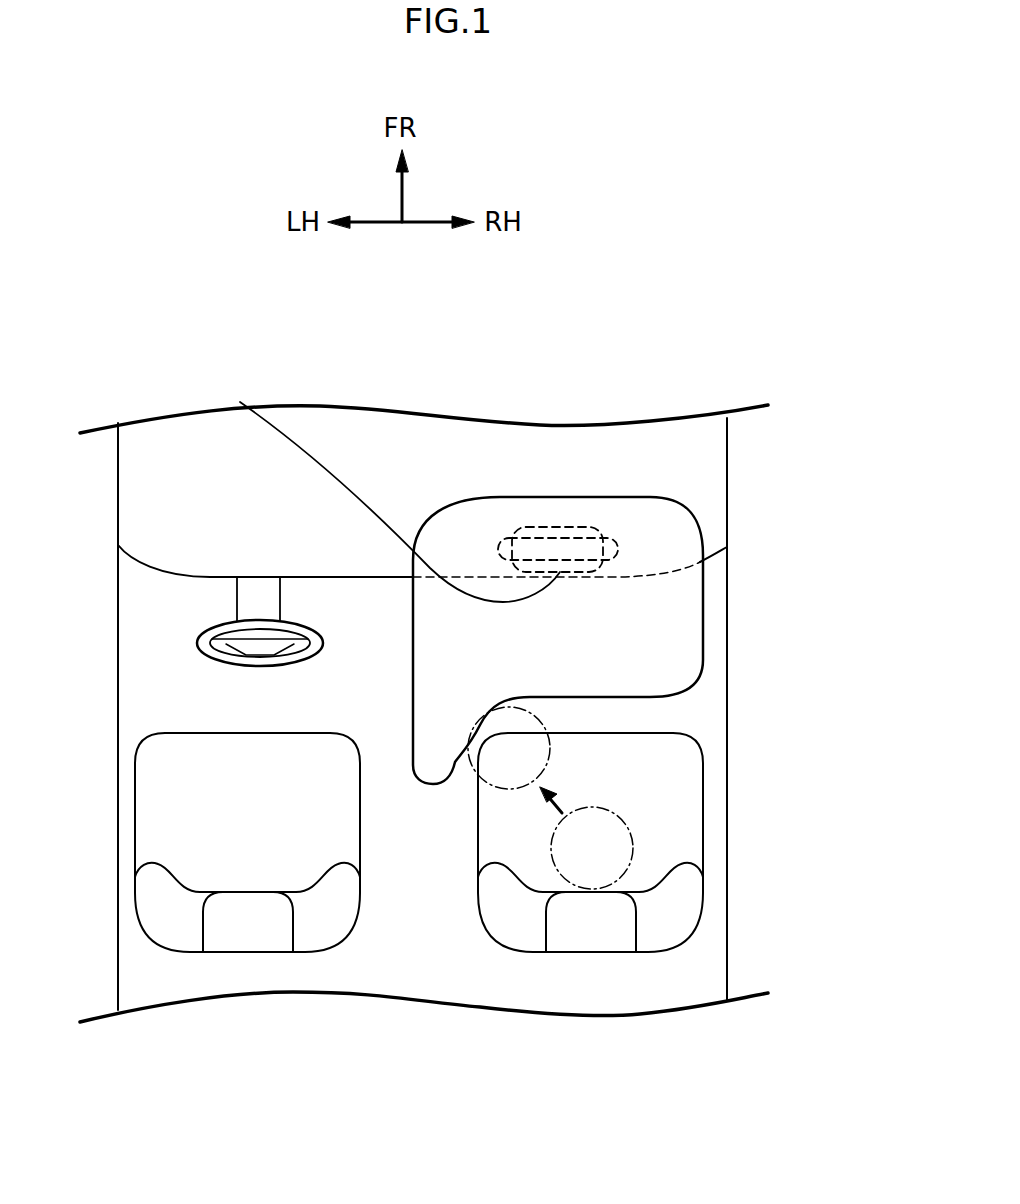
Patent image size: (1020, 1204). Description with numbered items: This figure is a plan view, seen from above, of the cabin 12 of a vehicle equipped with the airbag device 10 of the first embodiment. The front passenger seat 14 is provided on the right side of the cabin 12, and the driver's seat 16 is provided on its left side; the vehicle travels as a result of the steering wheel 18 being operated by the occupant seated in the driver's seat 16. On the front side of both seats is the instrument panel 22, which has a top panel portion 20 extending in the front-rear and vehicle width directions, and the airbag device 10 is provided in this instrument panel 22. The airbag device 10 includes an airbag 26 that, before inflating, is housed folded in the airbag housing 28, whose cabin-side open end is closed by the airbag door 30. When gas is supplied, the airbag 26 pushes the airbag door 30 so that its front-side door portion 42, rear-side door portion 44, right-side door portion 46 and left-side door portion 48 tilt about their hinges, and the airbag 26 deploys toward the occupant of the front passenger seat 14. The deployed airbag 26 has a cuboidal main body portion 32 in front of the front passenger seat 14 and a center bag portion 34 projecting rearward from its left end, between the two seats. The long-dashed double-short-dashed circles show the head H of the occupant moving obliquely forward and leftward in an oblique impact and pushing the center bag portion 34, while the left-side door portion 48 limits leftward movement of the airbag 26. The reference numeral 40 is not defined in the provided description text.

The airbag device 10 is at (540, 460).
The cabin 12 is at (403, 966).
The front passenger seat 14 is at (580, 952).
The driver's seat 16 is at (255, 952).
The steering wheel 18 is at (196, 645).
The top panel portion 20 is at (632, 450).
The instrument panel 22 is at (692, 467).
The airbag 26 is at (707, 603).
The airbag housing 28 is at (580, 545).
The airbag door 30 is at (647, 530).
The main body portion 32 is at (613, 698).
The center bag portion 34 is at (430, 784).
The airbag 40 is at (472, 435).
The front-side door portion 42 is at (525, 527).
The rear-side door portion 44 is at (240, 402).
The right-side door portion 46 is at (618, 550).
The left-side door portion 48 is at (497, 550).
The head H is at (553, 753).